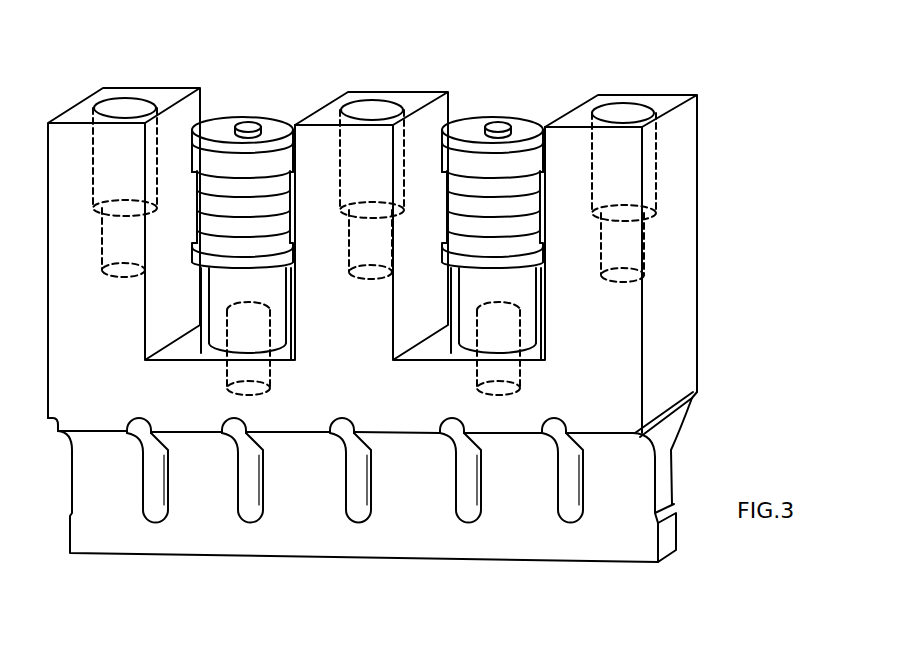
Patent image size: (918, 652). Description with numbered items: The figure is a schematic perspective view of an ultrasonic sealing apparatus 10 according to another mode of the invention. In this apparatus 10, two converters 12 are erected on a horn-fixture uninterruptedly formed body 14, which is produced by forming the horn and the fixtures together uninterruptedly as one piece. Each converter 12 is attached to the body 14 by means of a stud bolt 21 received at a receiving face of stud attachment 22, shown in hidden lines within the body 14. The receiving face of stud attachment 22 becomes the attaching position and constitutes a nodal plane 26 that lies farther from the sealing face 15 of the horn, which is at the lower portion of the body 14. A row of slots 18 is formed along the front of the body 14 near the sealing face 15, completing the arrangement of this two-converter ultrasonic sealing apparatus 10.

The ultrasonic sealing apparatus 10 is at (720, 52).
The converter 12 is at (254, 119).
The horn-fixture uninterruptedly formed body 14 is at (698, 280).
The sealing face 15 is at (345, 560).
The slot 18 is at (142, 487).
The stud bolt 21 is at (227, 372).
The receiving face of stud attachment 22 is at (95, 205).
The nodal plane 26 is at (98, 222).